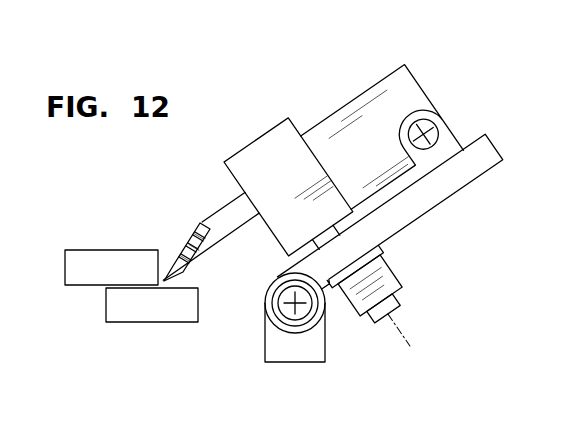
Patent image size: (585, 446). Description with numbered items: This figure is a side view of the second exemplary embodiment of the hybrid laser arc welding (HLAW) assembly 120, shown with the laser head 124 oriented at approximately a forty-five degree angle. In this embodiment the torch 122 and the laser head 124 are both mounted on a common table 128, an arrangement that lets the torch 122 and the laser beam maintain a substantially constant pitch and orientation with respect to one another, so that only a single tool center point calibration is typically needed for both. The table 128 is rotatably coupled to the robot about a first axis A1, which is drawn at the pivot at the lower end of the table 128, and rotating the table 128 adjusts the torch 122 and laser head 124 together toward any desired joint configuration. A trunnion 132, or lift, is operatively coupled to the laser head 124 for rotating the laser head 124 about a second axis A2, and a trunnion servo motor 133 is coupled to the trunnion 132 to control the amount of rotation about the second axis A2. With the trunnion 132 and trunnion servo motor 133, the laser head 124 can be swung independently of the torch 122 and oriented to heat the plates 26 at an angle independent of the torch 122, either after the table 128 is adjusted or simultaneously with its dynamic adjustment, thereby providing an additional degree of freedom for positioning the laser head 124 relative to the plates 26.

The plates 26 is at (127, 257).
The HLAW assembly 120 is at (426, 65).
The torch 122 is at (212, 210).
The laser head 124 is at (298, 128).
The table 128 is at (488, 150).
The trunnion 132 is at (389, 267).
The trunnion servo motor 133 is at (395, 310).
The first axis A1 is at (297, 305).
The second axis A2 is at (433, 127).